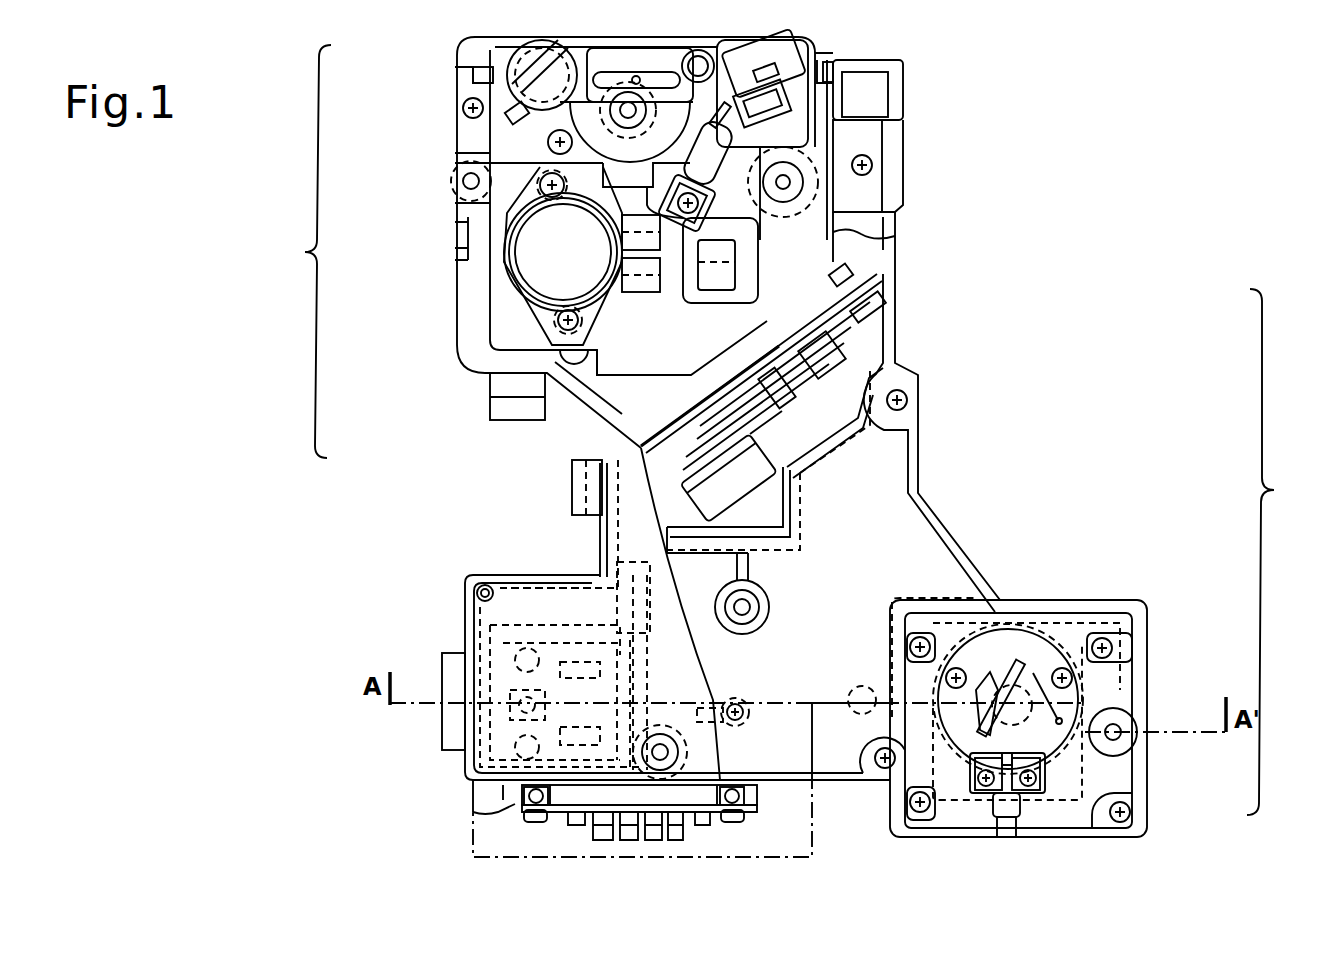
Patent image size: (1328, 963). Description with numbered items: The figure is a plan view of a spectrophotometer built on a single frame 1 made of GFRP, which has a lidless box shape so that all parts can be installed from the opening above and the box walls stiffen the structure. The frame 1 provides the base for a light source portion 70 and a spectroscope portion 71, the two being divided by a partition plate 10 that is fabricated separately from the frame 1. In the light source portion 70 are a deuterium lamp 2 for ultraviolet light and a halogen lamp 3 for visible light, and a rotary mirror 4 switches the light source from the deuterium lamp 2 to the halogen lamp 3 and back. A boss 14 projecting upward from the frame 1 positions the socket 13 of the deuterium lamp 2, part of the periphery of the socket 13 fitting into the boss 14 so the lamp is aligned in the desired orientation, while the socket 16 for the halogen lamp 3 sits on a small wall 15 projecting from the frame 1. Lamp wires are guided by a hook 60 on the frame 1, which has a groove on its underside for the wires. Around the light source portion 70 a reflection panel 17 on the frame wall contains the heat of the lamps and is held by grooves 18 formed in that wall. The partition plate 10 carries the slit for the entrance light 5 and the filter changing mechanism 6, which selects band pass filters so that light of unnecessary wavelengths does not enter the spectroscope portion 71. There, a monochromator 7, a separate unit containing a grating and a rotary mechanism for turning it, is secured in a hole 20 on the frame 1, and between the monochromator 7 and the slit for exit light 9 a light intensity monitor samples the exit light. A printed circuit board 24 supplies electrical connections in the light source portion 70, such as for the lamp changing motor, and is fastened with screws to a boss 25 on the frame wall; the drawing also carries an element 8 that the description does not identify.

The frame 1 is at (1145, 634).
The deuterium lamp 2 is at (500, 282).
The halogen lamp 3 is at (717, 131).
The rotary mirror 4 is at (555, 42).
The slit for the entrance light 5 is at (822, 376).
The filter changing mechanism 6 is at (748, 452).
The monochromator 7 is at (1035, 682).
The circuit component 8 is at (493, 733).
The slit for exit light 9 is at (468, 712).
The partition plate 10 is at (670, 414).
The socket 13 is at (482, 366).
The boss 14 is at (617, 359).
The small wall 15 is at (773, 100).
The socket 16 is at (810, 58).
The reflection panel 17 is at (898, 224).
The grooves 18 is at (455, 52).
The hole 20 is at (1020, 635).
The printed circuit board 24 is at (563, 812).
The boss 25 is at (473, 818).
The hook 60 is at (571, 504).
The light source portion 70 is at (305, 263).
The spectroscope portion 71 is at (1316, 508).